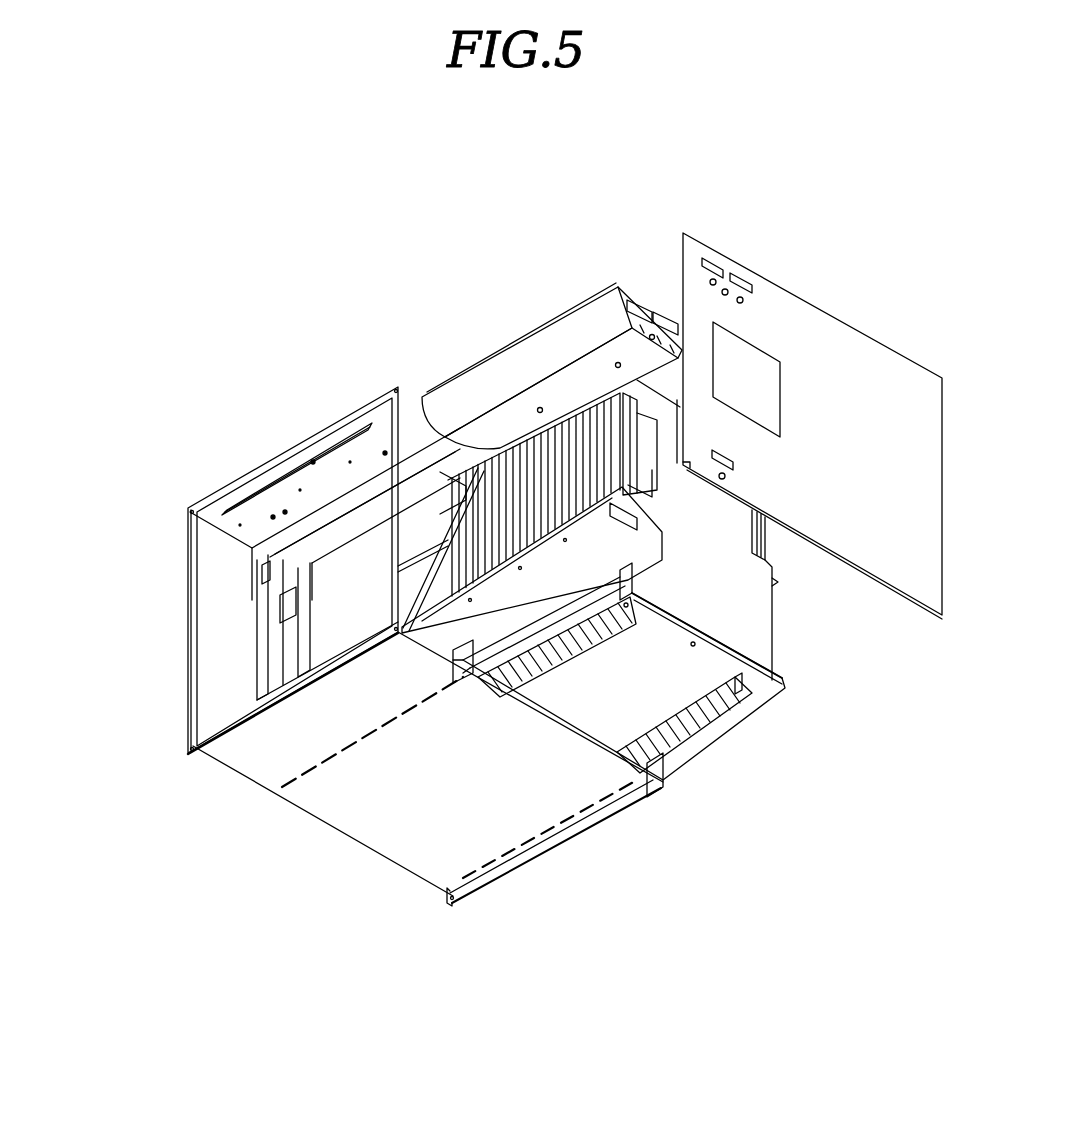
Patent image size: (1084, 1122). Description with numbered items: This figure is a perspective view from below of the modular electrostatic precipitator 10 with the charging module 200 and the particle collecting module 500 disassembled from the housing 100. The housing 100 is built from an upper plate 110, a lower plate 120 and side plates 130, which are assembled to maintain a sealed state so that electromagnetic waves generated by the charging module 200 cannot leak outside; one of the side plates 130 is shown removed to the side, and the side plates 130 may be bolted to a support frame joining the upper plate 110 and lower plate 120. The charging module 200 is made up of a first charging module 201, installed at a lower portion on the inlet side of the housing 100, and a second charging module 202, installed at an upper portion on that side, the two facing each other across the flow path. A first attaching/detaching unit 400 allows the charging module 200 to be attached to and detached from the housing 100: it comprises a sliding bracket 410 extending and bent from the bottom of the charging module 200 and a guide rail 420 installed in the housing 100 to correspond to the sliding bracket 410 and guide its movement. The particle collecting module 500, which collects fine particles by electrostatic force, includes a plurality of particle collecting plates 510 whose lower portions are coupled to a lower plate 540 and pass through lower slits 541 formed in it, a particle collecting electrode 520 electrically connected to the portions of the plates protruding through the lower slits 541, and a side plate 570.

The modular electrostatic precipitator 10 is at (502, 218).
The housing 100 is at (109, 488).
The upper plate 110 is at (190, 509).
The lower plate 120 is at (267, 723).
The side plates 130 is at (203, 607).
The charging module 200 is at (383, 258).
The first charging module 201 is at (587, 537).
The second charging module 202 is at (538, 340).
The first attaching/detaching unit 400 is at (402, 623).
The sliding bracket 410 is at (465, 672).
The guide rail 420 is at (363, 483).
The particle collecting module 500 is at (898, 622).
The particle collecting plate 510 is at (757, 533).
The particle collecting electrode 520 is at (710, 713).
The lower plate 540 is at (715, 670).
The lower slits 541 is at (757, 693).
The side plate 570 is at (757, 600).